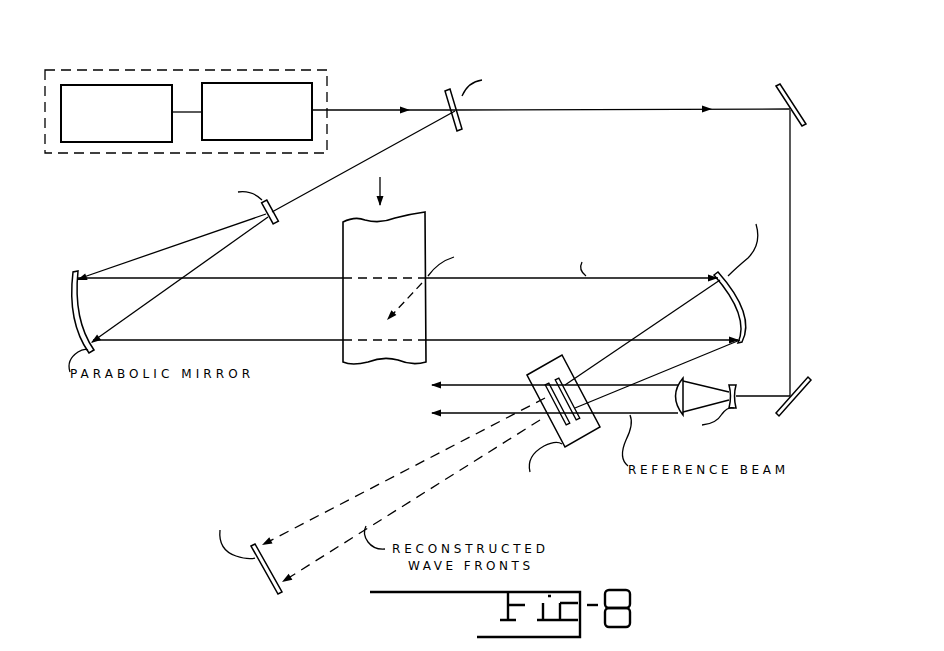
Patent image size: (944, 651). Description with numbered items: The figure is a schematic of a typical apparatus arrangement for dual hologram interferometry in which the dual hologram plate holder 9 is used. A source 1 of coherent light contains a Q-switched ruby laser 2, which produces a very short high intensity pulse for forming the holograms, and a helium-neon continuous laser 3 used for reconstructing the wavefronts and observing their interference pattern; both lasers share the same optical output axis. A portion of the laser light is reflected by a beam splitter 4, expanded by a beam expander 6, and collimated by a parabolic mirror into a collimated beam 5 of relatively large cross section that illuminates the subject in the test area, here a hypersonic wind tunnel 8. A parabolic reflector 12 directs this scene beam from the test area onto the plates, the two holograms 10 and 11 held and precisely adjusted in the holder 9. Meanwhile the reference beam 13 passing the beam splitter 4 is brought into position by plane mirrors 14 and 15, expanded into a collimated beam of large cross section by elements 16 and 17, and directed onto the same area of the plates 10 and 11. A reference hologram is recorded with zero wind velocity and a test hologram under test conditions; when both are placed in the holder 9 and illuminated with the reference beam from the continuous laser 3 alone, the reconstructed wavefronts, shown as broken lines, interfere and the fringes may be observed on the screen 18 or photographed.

The source 1 is at (215, 70).
The Q-switched ruby laser 2 is at (266, 83).
The helium-neon continuous laser 3 is at (112, 85).
The beam splitter 4 is at (460, 118).
The collimated beam 5 is at (258, 278).
The beam expander 6 is at (280, 209).
The hypersonic wind tunnel 8 is at (343, 256).
The dual hologram plate holder 9 is at (586, 431).
The hologram 10 is at (527, 381).
The hologram 11 is at (578, 373).
The parabolic reflector 12 is at (745, 305).
The reference beam 13 is at (650, 109).
The plane mirror 14 is at (794, 96).
The plane mirror 15 is at (803, 402).
The element 16 is at (742, 388).
The element 17 is at (688, 385).
The screen 18 is at (278, 586).